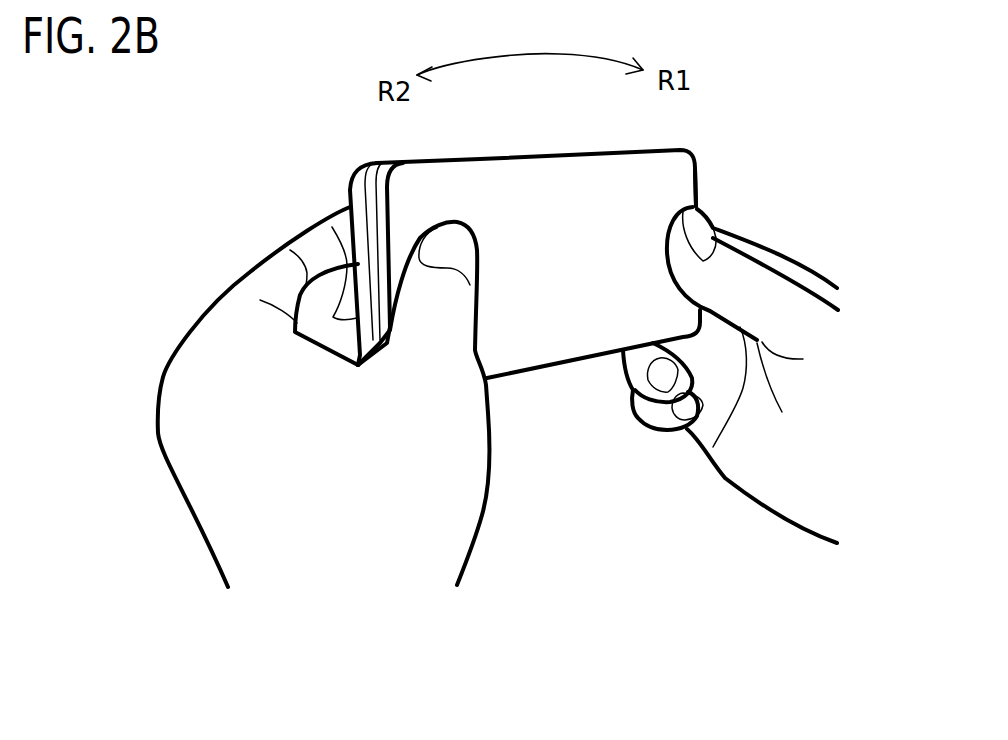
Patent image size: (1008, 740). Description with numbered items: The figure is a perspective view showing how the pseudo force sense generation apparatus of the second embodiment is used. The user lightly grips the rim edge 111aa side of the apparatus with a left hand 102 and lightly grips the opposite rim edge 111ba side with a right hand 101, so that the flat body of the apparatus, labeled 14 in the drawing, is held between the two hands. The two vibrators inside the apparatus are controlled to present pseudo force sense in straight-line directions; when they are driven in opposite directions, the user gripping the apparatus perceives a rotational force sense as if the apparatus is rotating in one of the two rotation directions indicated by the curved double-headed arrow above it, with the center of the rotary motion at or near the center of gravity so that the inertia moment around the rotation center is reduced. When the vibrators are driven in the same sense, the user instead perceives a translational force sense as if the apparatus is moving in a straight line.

The display device 14 is at (508, 155).
The right hand 101 is at (697, 240).
The left hand 102 is at (448, 247).
The rim edge 111aa is at (380, 267).
The rim edge 111ba is at (697, 187).